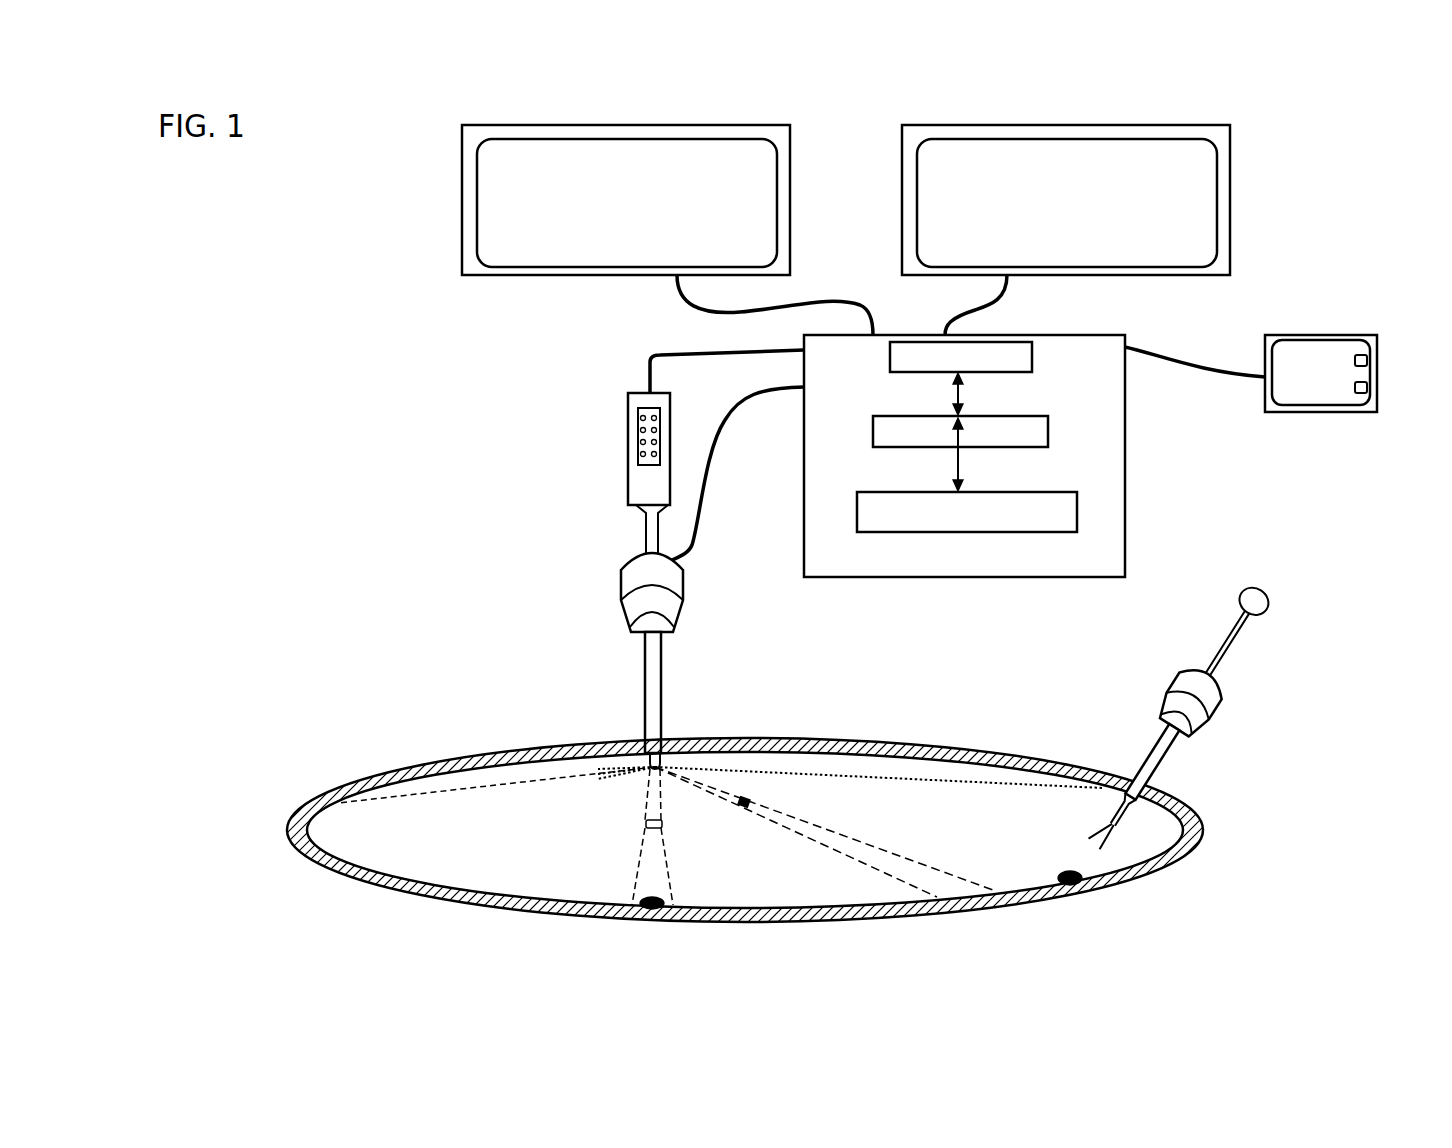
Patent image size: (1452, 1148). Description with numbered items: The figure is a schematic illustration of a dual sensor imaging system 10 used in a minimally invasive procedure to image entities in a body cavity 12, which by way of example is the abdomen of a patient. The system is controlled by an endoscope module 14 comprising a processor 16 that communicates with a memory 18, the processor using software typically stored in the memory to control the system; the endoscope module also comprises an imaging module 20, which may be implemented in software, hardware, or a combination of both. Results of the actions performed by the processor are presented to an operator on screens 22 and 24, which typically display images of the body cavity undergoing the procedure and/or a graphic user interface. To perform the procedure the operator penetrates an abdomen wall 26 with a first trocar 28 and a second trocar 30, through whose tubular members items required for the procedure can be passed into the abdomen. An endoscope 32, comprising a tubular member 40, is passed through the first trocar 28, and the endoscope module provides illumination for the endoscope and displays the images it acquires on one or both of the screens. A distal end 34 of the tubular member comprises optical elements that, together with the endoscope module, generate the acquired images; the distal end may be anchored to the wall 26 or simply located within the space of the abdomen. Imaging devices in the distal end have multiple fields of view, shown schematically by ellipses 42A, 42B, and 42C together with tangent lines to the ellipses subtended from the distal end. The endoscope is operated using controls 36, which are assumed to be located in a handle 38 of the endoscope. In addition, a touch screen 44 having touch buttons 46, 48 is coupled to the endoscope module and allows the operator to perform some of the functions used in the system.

The dual sensor imaging system 10 is at (248, 427).
The body cavity 12 is at (703, 858).
The endoscope module 14 is at (1005, 471).
The processor 16 is at (1048, 432).
The memory 18 is at (1032, 365).
The imaging module 20 is at (1077, 508).
The screen 22 is at (1230, 228).
The screen 24 is at (465, 213).
The abdomen wall 26 is at (882, 742).
The first trocar 28 is at (663, 678).
The second trocar 30 is at (1160, 766).
The endoscope 32 is at (647, 427).
The distal end 34 is at (650, 757).
The controls 36 is at (638, 445).
The handle 38 is at (628, 408).
The tubular member 40 is at (645, 535).
The ellipse 42A is at (600, 775).
The ellipse 42B is at (652, 821).
The ellipse 42C is at (745, 803).
The touch screen 44 is at (1271, 411).
The touch button 46 is at (1367, 361).
The touch button 48 is at (1367, 388).